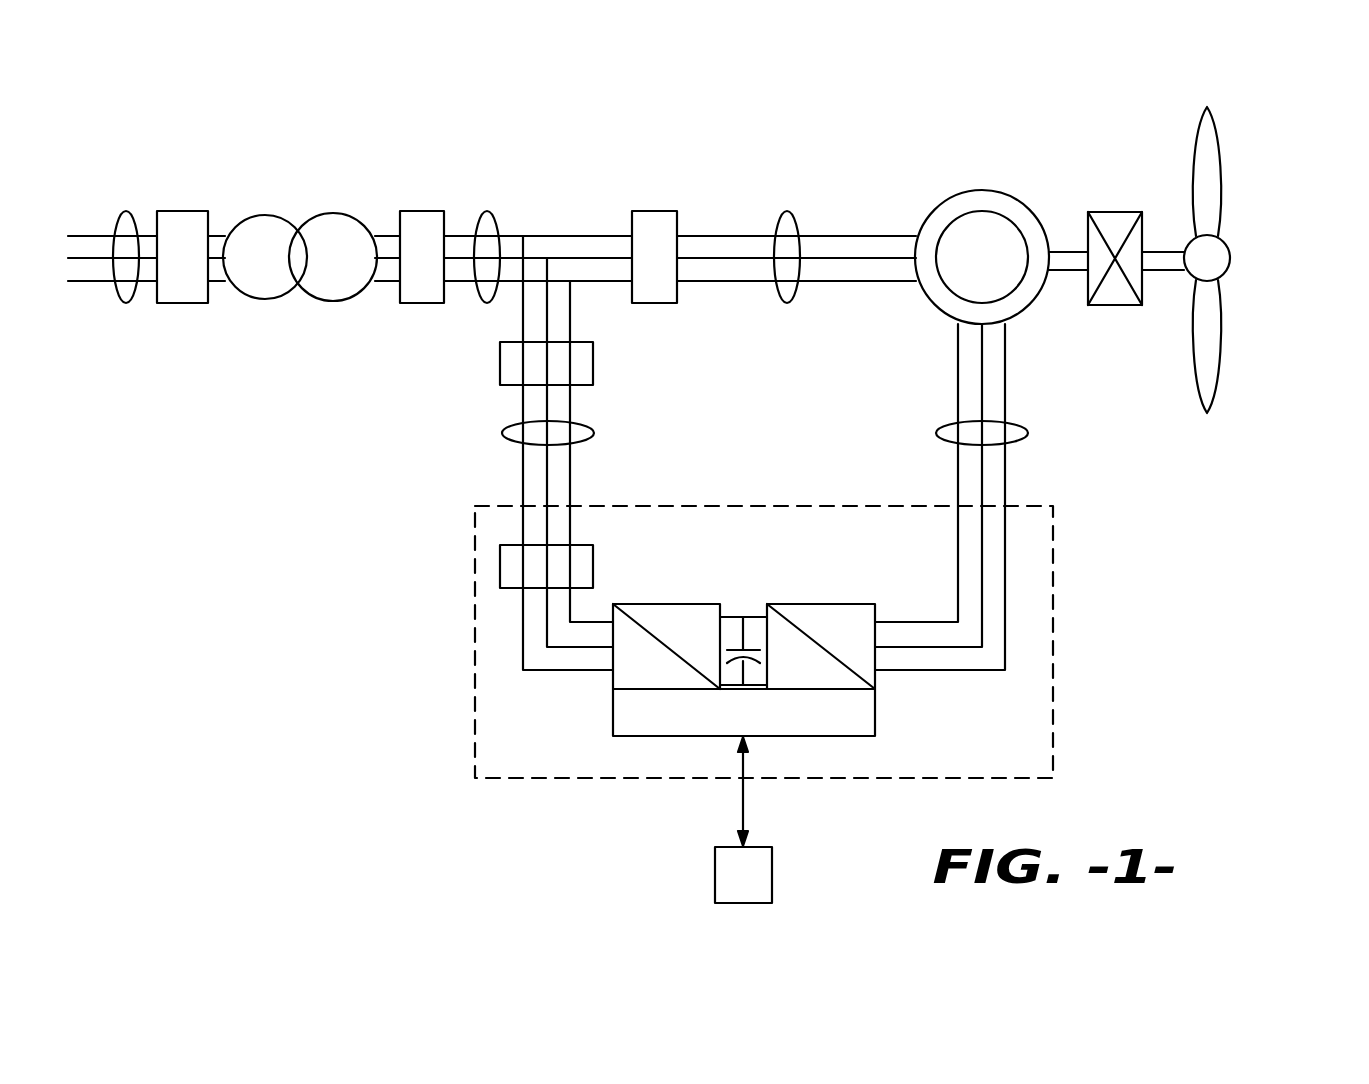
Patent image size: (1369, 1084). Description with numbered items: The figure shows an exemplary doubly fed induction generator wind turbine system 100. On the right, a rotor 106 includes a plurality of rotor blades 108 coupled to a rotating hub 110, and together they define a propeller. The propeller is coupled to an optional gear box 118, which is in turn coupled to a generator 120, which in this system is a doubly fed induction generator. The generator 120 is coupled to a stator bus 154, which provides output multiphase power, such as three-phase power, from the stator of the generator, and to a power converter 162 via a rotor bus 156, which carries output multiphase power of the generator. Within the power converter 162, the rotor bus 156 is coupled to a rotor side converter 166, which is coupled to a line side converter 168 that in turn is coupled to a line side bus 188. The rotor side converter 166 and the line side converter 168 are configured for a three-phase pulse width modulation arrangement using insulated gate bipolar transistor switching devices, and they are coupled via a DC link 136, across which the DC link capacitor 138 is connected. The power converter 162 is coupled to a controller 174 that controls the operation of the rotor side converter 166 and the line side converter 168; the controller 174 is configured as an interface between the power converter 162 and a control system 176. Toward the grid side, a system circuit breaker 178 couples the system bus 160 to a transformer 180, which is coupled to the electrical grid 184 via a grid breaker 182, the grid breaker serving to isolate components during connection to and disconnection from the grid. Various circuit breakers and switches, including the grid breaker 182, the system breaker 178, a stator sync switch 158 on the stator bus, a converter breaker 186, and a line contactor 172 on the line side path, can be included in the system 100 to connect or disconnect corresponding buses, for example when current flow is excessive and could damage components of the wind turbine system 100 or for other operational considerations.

The wind turbine system 100 is at (340, 625).
The rotor 106 is at (1263, 262).
The rotor blades 108 is at (1255, 162).
The rotating hub 110 is at (1232, 252).
The gear box 118 is at (1118, 212).
The generator 120 is at (979, 190).
The DC link 136 is at (751, 614).
The DC link capacitor 138 is at (729, 648).
The stator bus 154 is at (788, 211).
The rotor bus 156 is at (1030, 434).
The stator sync switch 158 is at (655, 211).
The system bus 160 is at (488, 211).
The power converter 162 is at (1055, 607).
The rotor side converter 166 is at (883, 677).
The line side converter 168 is at (607, 677).
The line contactor 172 is at (500, 568).
The controller 174 is at (667, 738).
The control system 176 is at (773, 870).
The system circuit breaker 178 is at (421, 211).
The transformer 180 is at (331, 213).
The grid breaker 182 is at (185, 211).
The electrical grid 184 is at (128, 211).
The converter breaker 186 is at (500, 366).
The line side bus 188 is at (502, 436).